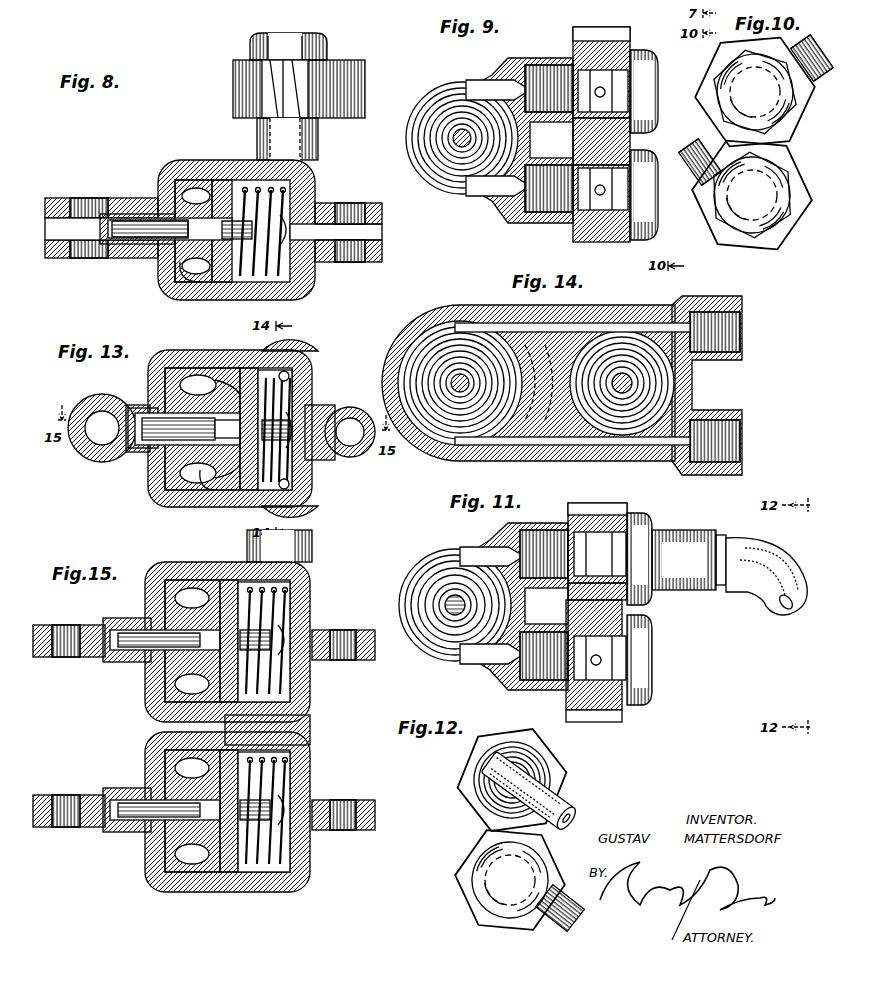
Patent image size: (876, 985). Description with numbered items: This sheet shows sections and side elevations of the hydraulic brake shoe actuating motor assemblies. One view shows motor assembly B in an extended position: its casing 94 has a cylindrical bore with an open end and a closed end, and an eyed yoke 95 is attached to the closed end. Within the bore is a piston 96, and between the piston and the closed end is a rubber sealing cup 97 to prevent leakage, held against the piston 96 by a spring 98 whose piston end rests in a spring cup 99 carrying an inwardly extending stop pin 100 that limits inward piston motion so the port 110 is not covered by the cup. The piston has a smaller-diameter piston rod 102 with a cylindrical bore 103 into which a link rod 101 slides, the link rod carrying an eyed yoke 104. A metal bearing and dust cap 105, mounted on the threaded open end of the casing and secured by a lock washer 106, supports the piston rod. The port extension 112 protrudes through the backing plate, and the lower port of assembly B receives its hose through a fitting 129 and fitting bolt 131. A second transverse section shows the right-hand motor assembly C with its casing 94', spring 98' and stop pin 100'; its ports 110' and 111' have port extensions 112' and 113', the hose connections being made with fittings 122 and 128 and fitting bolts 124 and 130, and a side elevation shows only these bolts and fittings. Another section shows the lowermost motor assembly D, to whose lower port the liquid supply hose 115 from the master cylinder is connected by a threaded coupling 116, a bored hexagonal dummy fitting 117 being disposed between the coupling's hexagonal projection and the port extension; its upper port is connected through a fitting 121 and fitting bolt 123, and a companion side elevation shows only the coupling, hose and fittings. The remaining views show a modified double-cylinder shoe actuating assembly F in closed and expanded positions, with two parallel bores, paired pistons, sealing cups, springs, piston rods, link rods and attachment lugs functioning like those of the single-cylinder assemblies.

In FIG. 8, the casing 94 is at (246, 237).
In FIG. 8, the eyed yoke 95 is at (370, 202).
In FIG. 8, the piston 96 is at (195, 284).
In FIG. 8, the rubber sealing cup 97 is at (228, 180).
In FIG. 8, the spring 98 is at (278, 254).
In FIG. 8, the spring cup 99 is at (230, 282).
In FIG. 8, the stop pin 100 is at (262, 267).
In FIG. 8, the link rod 101 is at (130, 220).
In FIG. 8, the piston rod 102 is at (150, 240).
In FIG. 8, the cylindrical bore 103 is at (128, 246).
In FIG. 8, the eyed yoke 104 is at (82, 197).
In FIG. 8, the bearing and dust cap 105 is at (175, 178).
In FIG. 8, the lock washer 106 is at (210, 180).
In FIG. 8, the port 110 is at (333, 232).
In FIG. 8, the port extension 112 is at (307, 139).
In FIG. 8, the fitting 129 is at (336, 68).
In FIG. 8, the fitting bolt 131 is at (304, 38).
In FIG. 8, the motor assembly B is at (156, 165).
In FIG. 9, the casing 94' is at (512, 134).
In FIG. 9, the spring 98' is at (451, 136).
In FIG. 9, the stop pin 100' is at (430, 140).
In FIG. 9, the port 110' is at (498, 67).
In FIG. 9, the port 111' is at (498, 207).
In FIG. 9, the port extension 112' is at (549, 83).
In FIG. 9, the port extension 113' is at (545, 207).
In FIG. 9, the fitting 122 is at (585, 45).
In FIG. 10, the fitting 122 is at (725, 58).
In FIG. 9, the fitting bolt 124 is at (656, 105).
In FIG. 10, the fitting bolt 124 is at (790, 108).
In FIG. 9, the fitting 128 is at (592, 242).
In FIG. 10, the fitting 128 is at (735, 244).
In FIG. 9, the fitting bolt 130 is at (650, 208).
In FIG. 10, the fitting bolt 130 is at (775, 215).
In FIG. 9, the motor assembly C is at (435, 67).
In FIG. 11, the liquid supply hose 115 is at (780, 558).
In FIG. 12, the liquid supply hose 115 is at (566, 796).
In FIG. 11, the threaded coupling 116 is at (688, 535).
In FIG. 12, the threaded coupling 116 is at (540, 760).
In FIG. 11, the bored hexagonal dummy fitting 117 is at (606, 510).
In FIG. 12, the bored hexagonal dummy fitting 117 is at (462, 785).
In FIG. 11, the fitting 121 is at (578, 697).
In FIG. 12, the fitting 121 is at (462, 892).
In FIG. 11, the fitting bolt 123 is at (648, 670).
In FIG. 12, the fitting bolt 123 is at (488, 912).
In FIG. 11, the motor assembly D is at (422, 534).
In FIG. 13, the shoe actuating assembly F is at (172, 346).
In FIG. 14, the shoe actuating assembly F is at (446, 297).
In FIG. 15, the shoe actuating assembly F is at (165, 558).